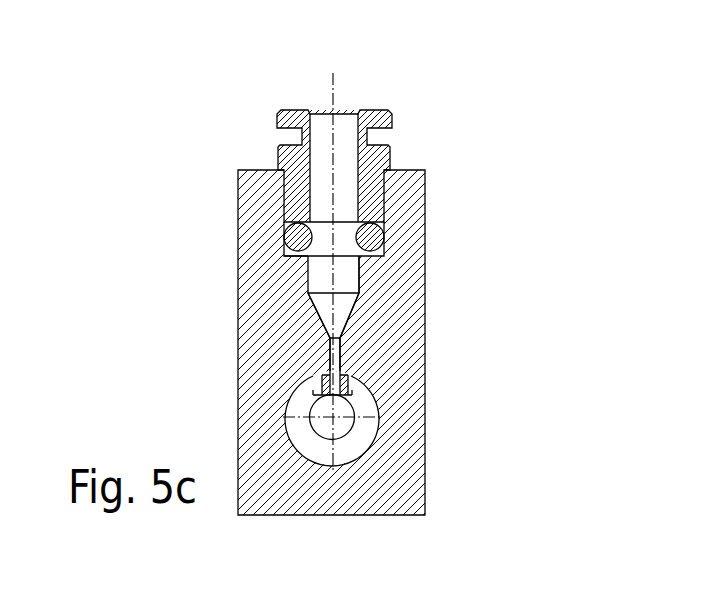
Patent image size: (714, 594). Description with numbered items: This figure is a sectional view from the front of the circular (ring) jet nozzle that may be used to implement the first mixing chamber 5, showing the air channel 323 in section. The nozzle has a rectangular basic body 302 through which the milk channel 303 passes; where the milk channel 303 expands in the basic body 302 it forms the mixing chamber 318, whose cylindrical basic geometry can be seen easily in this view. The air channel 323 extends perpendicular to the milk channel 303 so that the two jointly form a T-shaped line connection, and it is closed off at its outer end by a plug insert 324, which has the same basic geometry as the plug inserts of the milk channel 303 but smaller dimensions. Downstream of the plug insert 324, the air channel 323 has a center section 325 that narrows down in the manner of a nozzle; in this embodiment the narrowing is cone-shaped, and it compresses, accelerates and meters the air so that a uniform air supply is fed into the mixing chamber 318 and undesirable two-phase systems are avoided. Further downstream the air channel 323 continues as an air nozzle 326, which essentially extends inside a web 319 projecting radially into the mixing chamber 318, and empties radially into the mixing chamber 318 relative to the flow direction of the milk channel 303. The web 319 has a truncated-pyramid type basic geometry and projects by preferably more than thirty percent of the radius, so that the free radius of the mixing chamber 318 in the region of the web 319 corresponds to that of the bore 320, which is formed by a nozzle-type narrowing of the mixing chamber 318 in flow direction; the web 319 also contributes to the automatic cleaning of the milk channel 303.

The first mixing chamber 5 is at (200, 115).
The basic body 302 is at (373, 490).
The milk channel 303 is at (332, 417).
The mixing chamber 318 is at (363, 433).
The web 319 is at (212, 353).
The bore 320 is at (478, 405).
The air channel 323 is at (207, 254).
The plug insert 324 is at (387, 113).
The center section 325 is at (426, 307).
The air nozzle 326 is at (426, 364).